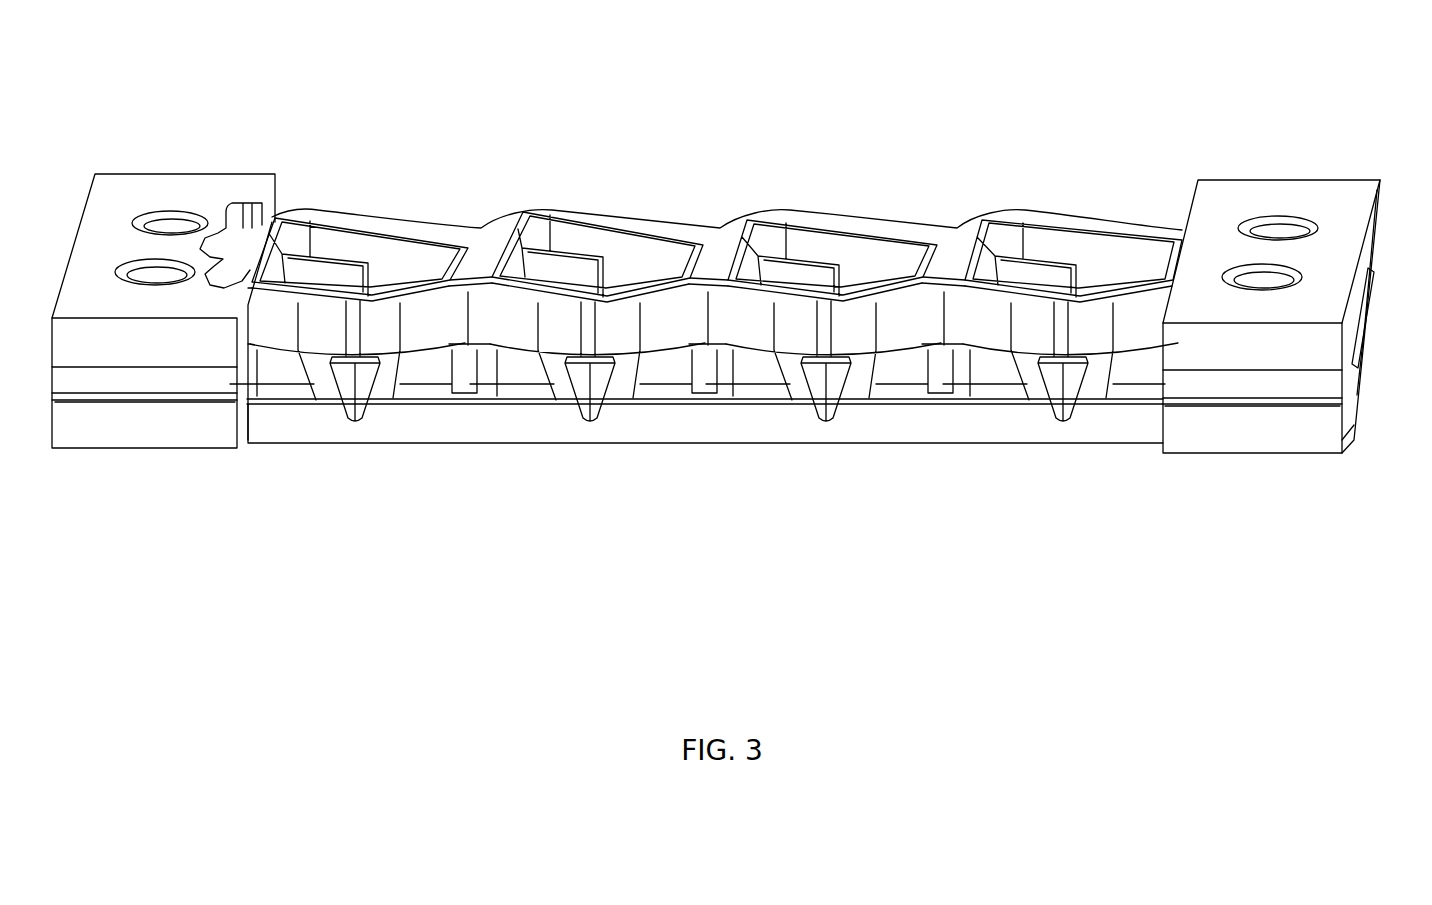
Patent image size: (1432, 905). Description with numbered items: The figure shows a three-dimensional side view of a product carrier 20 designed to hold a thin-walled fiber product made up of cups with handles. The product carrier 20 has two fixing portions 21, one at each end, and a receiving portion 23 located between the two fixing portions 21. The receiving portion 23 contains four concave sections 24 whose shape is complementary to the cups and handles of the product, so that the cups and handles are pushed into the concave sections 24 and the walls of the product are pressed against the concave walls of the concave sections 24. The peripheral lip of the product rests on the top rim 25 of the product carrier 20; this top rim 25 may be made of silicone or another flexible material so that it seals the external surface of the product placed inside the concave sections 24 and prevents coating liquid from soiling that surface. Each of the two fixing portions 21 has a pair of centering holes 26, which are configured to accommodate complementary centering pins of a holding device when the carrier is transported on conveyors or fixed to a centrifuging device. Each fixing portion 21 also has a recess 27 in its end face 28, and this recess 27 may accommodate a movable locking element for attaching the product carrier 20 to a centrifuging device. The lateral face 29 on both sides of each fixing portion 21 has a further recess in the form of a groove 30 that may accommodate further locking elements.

The product carrier 20 is at (668, 449).
The fixing portion 21 is at (213, 182).
The receiving portion 23 is at (738, 135).
The concave section 24 is at (398, 270).
The top rim 25 is at (511, 205).
The centering hole 26 is at (137, 258).
The recess 27 is at (1374, 318).
The end face 28 is at (1352, 379).
The lateral face 29 is at (83, 418).
The groove 30 is at (133, 377).